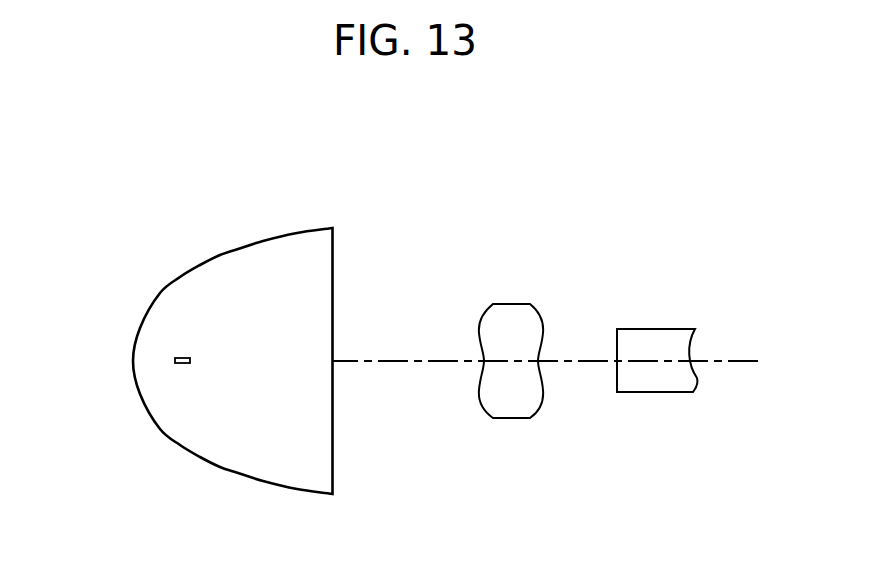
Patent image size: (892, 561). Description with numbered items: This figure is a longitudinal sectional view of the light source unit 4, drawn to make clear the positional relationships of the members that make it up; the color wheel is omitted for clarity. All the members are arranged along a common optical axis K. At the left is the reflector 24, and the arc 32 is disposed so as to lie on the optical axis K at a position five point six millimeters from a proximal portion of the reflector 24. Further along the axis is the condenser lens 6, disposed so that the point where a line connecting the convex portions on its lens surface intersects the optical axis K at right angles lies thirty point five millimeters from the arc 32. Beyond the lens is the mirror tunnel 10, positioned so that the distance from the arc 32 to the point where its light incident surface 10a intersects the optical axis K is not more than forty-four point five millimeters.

The light source unit 4 is at (483, 214).
The condenser lens 6 is at (508, 305).
The mirror tunnel 10 is at (662, 328).
The light incident surface 10a is at (617, 342).
The reflector 24 is at (255, 242).
The arc 32 is at (182, 358).
The optical axis K is at (393, 360).